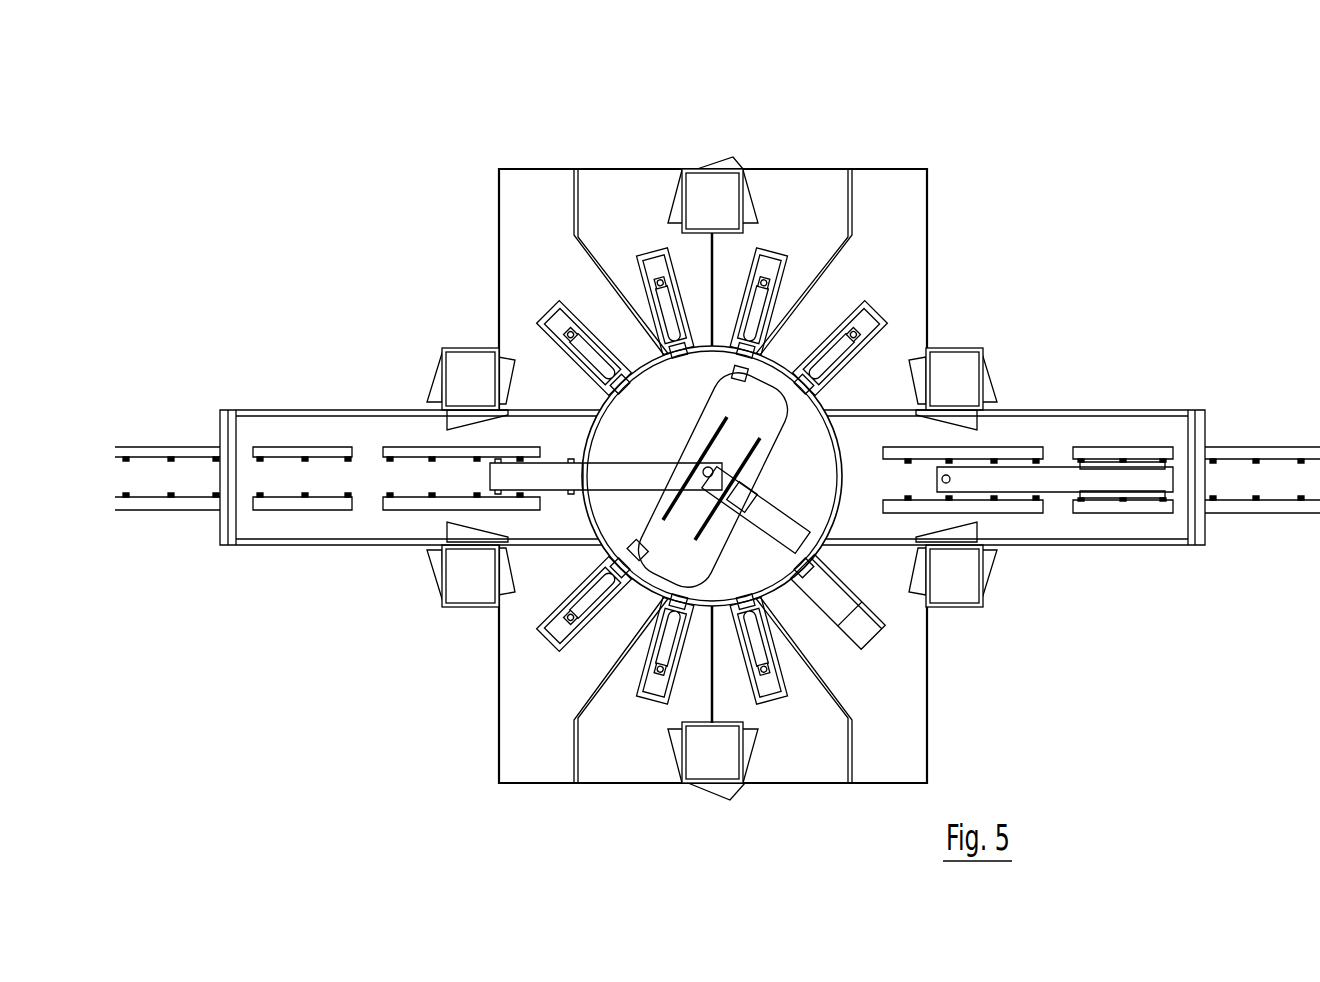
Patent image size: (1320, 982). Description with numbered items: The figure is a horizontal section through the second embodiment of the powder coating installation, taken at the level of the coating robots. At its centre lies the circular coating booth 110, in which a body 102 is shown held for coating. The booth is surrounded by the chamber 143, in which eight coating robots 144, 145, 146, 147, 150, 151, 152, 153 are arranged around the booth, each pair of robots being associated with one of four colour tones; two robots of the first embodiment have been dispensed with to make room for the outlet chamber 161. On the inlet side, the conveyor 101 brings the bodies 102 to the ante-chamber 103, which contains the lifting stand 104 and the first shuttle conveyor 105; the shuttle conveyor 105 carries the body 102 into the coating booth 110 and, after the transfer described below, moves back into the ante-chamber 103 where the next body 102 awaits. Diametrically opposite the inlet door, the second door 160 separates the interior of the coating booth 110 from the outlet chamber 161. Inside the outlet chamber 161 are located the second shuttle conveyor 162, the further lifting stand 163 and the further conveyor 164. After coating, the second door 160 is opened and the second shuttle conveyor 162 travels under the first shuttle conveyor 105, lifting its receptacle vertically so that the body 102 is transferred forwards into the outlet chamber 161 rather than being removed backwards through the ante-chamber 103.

The conveyor 101 is at (153, 451).
The body 102 is at (704, 440).
The ante-chamber 103 is at (293, 448).
The lifting stand 104 is at (415, 465).
The shuttle conveyor 105 is at (518, 475).
The coating booth 110 is at (815, 448).
The chamber 143 is at (594, 208).
The coating robot 144 is at (560, 322).
The coating robot 145 is at (660, 262).
The coating robot 146 is at (765, 262).
The coating robot 147 is at (860, 330).
The coating robot 150 is at (862, 635).
The coating robot 151 is at (770, 698).
The coating robot 152 is at (667, 700).
The coating robot 153 is at (558, 648).
The second door 160 is at (843, 473).
The outlet chamber 161 is at (1138, 444).
The second shuttle conveyor 162 is at (1062, 478).
The further lifting stand 163 is at (1003, 510).
The further conveyor 164 is at (1293, 457).